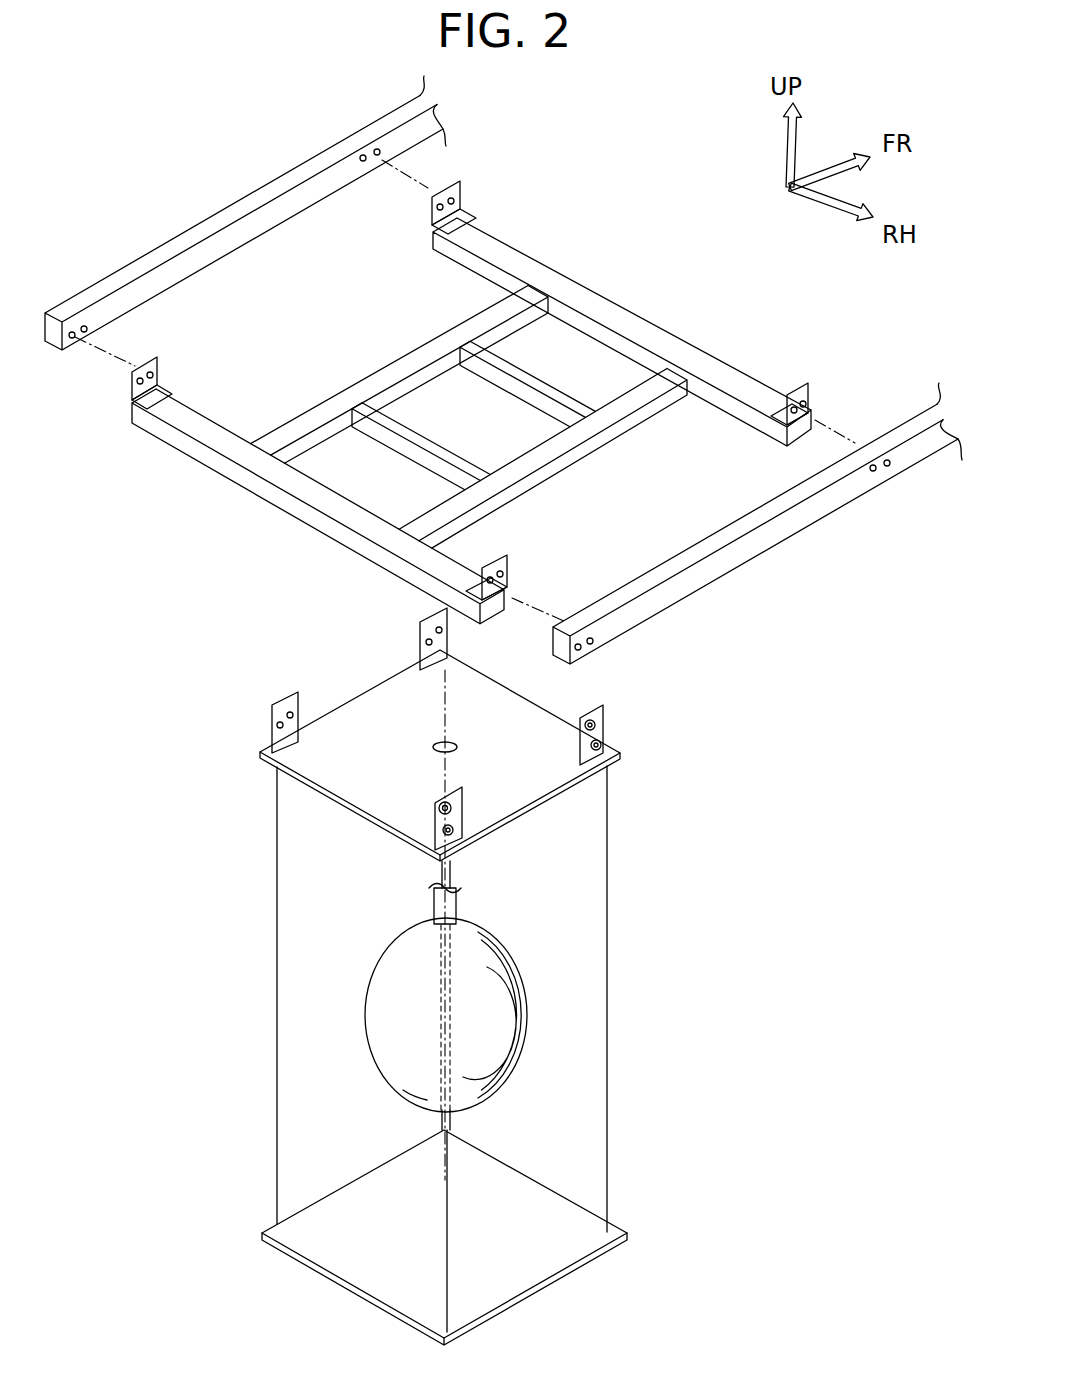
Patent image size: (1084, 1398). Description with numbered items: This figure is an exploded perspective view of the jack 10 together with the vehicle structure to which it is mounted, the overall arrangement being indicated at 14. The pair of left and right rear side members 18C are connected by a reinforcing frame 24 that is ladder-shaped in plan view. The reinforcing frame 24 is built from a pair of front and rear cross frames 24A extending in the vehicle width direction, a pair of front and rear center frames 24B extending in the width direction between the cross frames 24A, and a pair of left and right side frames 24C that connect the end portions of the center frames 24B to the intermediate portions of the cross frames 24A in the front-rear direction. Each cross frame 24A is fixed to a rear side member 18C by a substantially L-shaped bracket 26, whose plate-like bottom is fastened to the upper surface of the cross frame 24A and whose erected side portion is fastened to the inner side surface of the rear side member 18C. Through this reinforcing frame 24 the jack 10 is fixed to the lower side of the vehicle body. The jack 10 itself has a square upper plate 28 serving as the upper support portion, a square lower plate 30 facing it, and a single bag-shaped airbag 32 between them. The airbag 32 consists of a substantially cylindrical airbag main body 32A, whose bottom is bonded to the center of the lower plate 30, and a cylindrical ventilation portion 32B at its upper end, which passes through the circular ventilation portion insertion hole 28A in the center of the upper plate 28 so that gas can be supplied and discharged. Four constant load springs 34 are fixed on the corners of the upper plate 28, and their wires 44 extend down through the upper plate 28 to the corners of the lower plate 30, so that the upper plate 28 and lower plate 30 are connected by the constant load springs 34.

The jack 10 is at (426, 956).
The support frame assembly 14 is at (600, 147).
The rear side member 18C is at (240, 198).
The reinforcing frame 24 is at (429, 404).
The cross frame 24A is at (510, 240).
The center frame 24B is at (520, 360).
The side frame 24C is at (317, 400).
The bracket 26 is at (460, 182).
The upper plate 28 is at (469, 744).
The ventilation portion insertion hole 28A is at (440, 745).
The lower plate 30 is at (565, 1280).
The airbag 32 is at (424, 981).
The airbag main body 32A is at (365, 1015).
The ventilation portion 32B is at (435, 905).
The constant load spring 34 is at (419, 622).
The wire 44 is at (440, 1122).